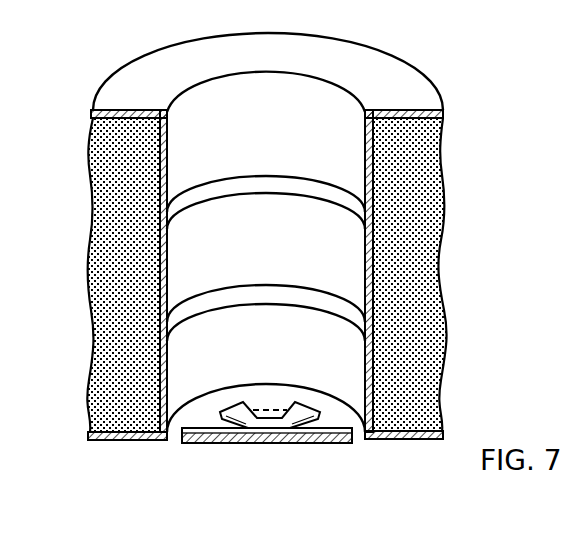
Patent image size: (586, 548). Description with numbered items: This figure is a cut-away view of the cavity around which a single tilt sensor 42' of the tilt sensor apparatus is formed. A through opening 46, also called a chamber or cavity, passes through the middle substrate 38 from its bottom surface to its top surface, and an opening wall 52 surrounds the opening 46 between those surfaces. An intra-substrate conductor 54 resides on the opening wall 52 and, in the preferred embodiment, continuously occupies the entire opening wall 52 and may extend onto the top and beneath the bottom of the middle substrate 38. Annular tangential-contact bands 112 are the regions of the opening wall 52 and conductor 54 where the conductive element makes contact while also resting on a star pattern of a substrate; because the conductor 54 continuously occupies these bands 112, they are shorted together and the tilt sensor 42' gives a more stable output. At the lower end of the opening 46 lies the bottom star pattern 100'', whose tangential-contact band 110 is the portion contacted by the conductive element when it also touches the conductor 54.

The middle substrate 38 is at (436, 241).
The intra-substrate conductor 54 is at (166, 56).
The through opening 46 is at (298, 88).
The opening wall 52 is at (158, 168).
The annular tangential-contact bands 112 is at (273, 183).
The tilt sensor 42' is at (266, 435).
The bottom star pattern 100'' is at (251, 451).
The tangential-contact band 110 is at (288, 413).